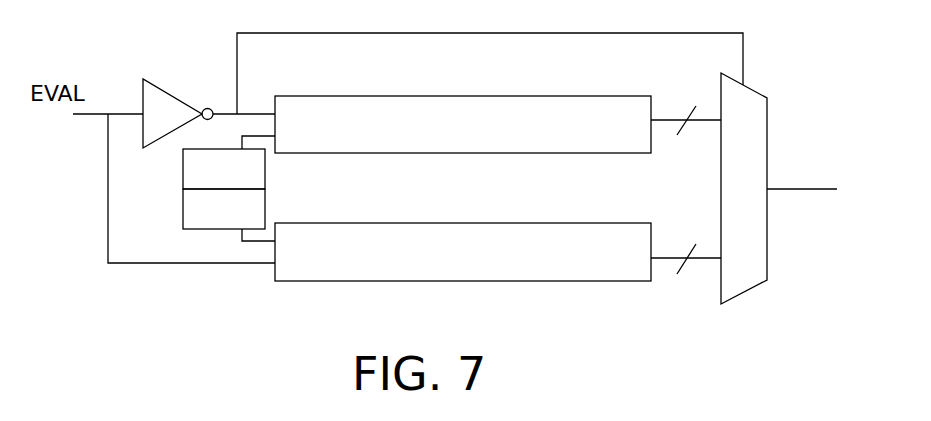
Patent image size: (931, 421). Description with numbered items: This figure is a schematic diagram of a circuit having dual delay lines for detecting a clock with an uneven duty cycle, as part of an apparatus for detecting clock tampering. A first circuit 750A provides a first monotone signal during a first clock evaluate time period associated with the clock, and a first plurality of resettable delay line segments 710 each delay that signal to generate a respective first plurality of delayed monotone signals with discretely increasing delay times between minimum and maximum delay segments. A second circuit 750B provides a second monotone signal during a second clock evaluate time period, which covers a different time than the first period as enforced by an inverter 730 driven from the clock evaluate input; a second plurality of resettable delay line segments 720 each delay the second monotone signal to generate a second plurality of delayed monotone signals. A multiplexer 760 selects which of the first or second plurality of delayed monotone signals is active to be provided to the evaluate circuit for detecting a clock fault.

The first plurality of resettable delay line segments 710 is at (498, 124).
The second plurality of resettable delay line segments 720 is at (498, 252).
The inverter 730 is at (168, 92).
The first circuit 750A is at (229, 162).
The second circuit 750B is at (229, 215).
The multiplexer 760 is at (721, 194).